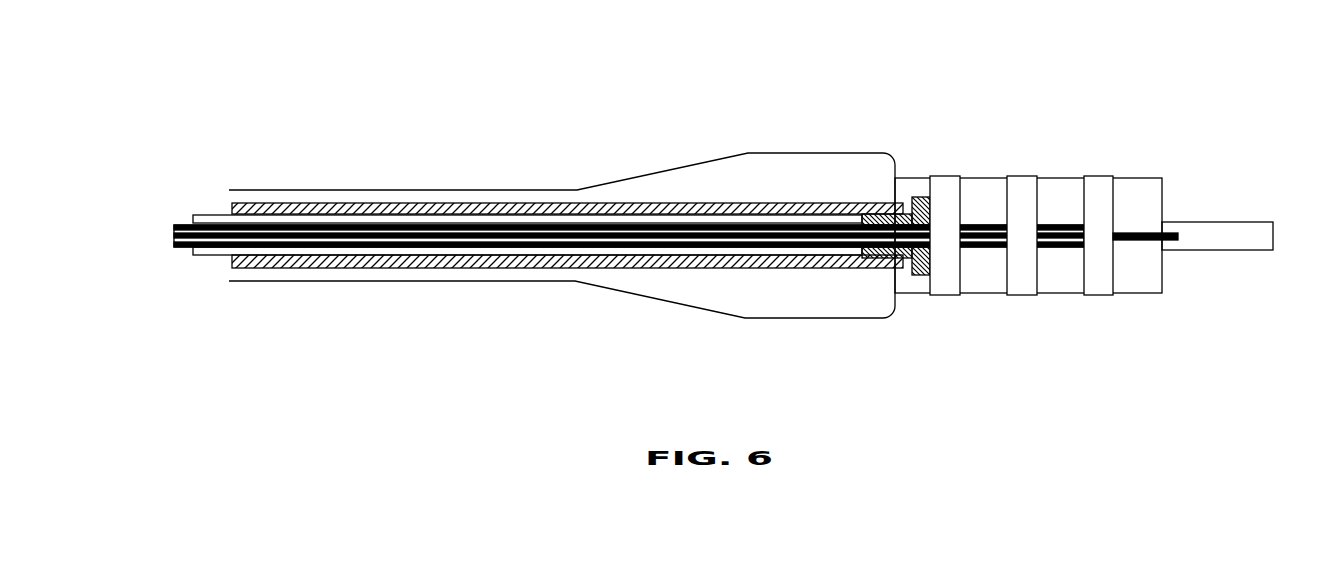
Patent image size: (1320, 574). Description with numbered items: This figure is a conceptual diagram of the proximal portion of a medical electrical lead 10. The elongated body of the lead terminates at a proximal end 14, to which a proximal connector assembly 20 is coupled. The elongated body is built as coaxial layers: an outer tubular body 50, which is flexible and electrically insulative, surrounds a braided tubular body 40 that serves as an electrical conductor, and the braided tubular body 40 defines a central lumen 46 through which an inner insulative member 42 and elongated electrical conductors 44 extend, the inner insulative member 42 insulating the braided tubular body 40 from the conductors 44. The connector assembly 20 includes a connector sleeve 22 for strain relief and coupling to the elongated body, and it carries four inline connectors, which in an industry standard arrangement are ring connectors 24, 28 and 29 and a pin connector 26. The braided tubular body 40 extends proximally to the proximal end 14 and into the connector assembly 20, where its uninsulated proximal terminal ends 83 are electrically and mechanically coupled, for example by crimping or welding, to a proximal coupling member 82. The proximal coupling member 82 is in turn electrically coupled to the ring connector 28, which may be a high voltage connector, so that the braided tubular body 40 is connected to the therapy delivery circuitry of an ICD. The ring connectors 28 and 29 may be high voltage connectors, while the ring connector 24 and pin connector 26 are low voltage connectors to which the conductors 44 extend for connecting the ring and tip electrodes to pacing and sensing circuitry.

The lead 10 is at (721, 45).
The proximal end 14 is at (575, 282).
The proximal connector assembly 20 is at (950, 82).
The connector sleeve 22 is at (785, 307).
The ring connector 24 is at (1095, 295).
The pin connector 26 is at (1232, 222).
The ring connector 28 is at (937, 295).
The ring connector 29 is at (1015, 295).
The braided tubular body 40 is at (422, 203).
The inner insulative member 42 is at (207, 256).
The electrical conductors 44 is at (185, 247).
The central lumen 46 is at (858, 203).
The outer tubular body 50 is at (297, 190).
The proximal coupling member 82 is at (917, 196).
The proximal terminal ends 83 is at (900, 270).